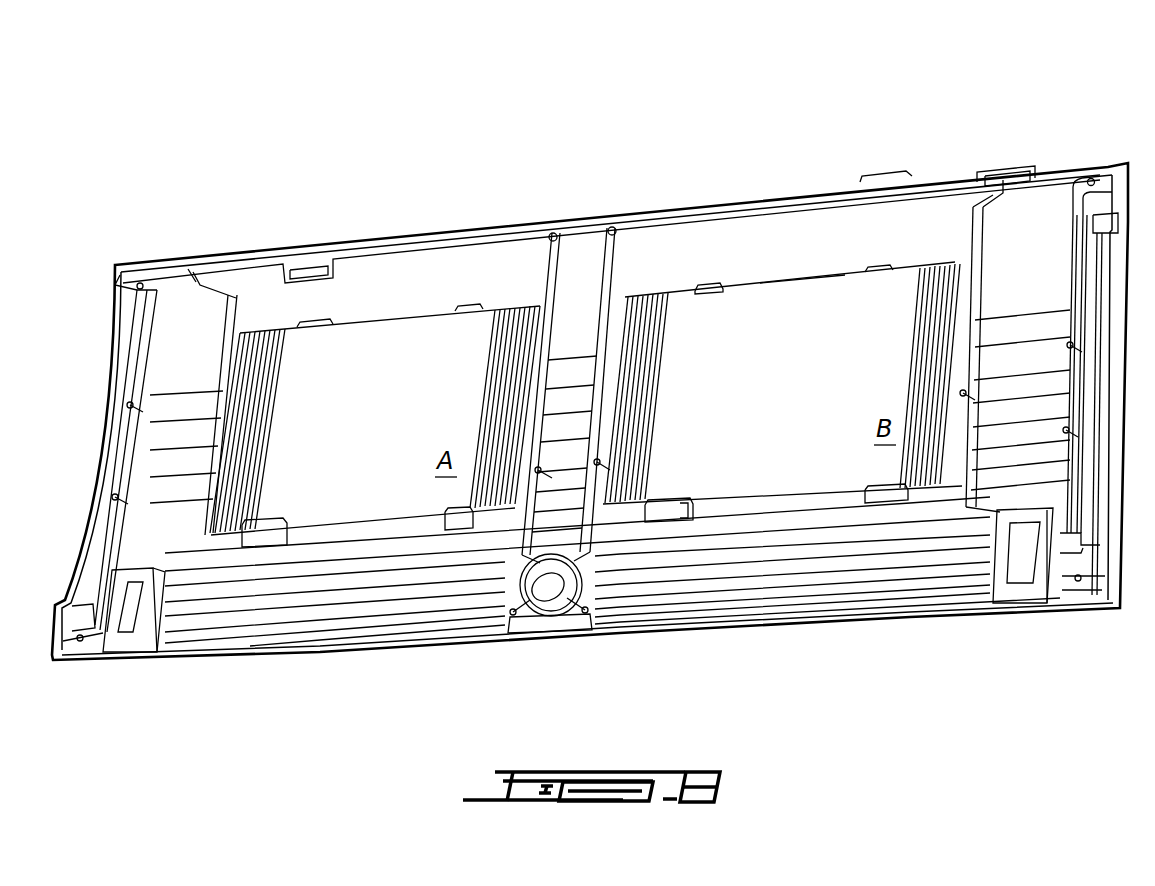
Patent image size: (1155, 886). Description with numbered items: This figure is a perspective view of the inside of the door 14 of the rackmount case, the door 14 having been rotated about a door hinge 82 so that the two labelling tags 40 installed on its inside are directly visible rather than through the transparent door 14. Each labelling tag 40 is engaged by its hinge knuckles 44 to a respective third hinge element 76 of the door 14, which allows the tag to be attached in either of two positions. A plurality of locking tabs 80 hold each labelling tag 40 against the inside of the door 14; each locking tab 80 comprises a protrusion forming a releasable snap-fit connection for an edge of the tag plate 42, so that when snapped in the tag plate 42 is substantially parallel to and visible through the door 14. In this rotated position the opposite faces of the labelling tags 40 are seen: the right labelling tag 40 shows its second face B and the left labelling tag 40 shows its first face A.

The door 14 is at (196, 136).
The labelling tag 40 is at (392, 437).
The tag plate 42 is at (803, 277).
The hinge knuckles 44 is at (663, 507).
The third hinge element 76 is at (693, 513).
The locking tab 80 is at (703, 283).
The door hinge 82 is at (1008, 170).